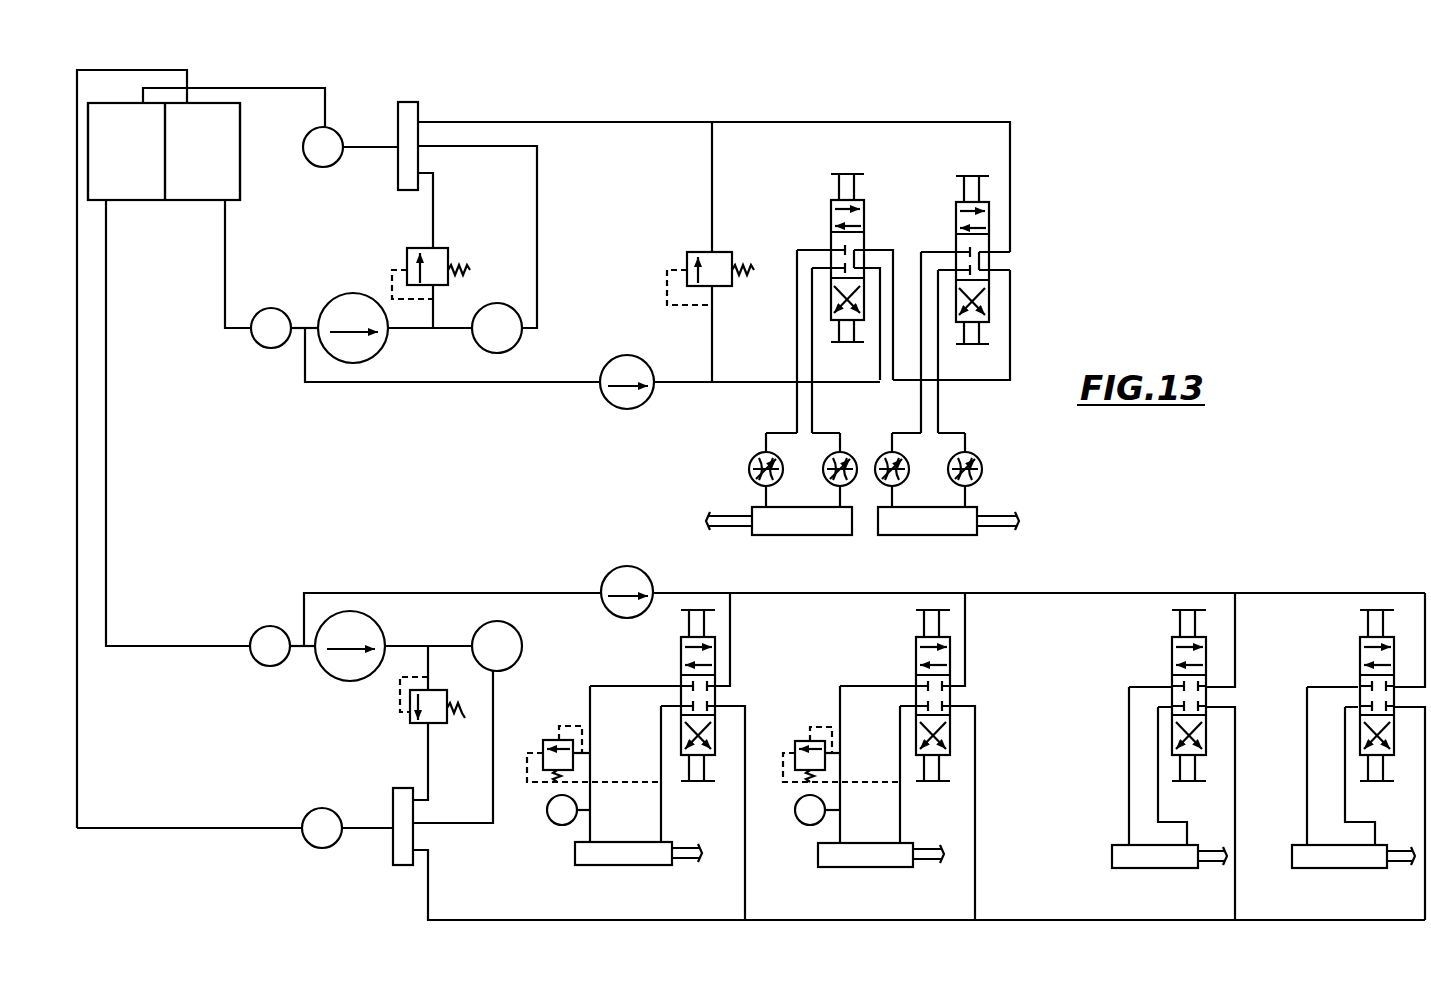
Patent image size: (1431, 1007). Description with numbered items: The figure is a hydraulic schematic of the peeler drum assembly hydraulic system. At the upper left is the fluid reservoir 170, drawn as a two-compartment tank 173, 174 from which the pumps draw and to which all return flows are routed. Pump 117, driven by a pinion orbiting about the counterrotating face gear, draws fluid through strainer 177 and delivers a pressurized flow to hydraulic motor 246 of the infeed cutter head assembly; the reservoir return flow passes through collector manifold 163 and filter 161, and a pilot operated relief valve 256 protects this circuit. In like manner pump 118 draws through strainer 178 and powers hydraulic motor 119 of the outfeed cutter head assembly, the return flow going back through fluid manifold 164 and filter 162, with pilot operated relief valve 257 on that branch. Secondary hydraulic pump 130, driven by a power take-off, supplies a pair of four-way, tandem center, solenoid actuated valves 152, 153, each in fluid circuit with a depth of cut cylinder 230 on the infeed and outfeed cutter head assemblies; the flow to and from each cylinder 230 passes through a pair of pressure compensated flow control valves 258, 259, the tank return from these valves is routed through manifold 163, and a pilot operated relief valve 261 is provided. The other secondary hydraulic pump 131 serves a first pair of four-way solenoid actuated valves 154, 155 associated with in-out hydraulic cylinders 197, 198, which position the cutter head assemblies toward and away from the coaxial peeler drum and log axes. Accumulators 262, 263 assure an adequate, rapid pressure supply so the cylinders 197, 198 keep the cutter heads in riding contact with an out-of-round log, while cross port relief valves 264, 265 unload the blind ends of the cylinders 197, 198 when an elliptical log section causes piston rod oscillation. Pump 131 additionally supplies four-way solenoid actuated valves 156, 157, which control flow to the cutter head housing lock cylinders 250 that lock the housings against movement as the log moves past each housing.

The hydraulic fluid reservoir 170 is at (150, 200).
The reservoir compartment 173 is at (137, 165).
The reservoir compartment 174 is at (218, 165).
The filter 161 is at (321, 167).
The collector manifold 163 is at (398, 173).
The pilot operated relief valve 256 is at (442, 250).
The strainer 177 is at (268, 348).
The hydraulic pump 117 is at (372, 352).
The hydraulic motor 246 is at (495, 353).
The secondary hydraulic pump 130 is at (617, 408).
The pilot operated relief valve 261 is at (722, 286).
The four-way, tandem center, solenoid actuated valve 152 is at (866, 224).
The four-way, tandem center, solenoid actuated valve 153 is at (955, 225).
The pressure compensated flow control valves 258 is at (825, 467).
The pressure compensated flow control valves 259 is at (950, 467).
The depth of cut cylinder 230 is at (797, 535).
The secondary hydraulic pump 131 is at (614, 566).
The strainer 178 is at (267, 666).
The hydraulic pump 118 is at (338, 668).
The hydraulic motor 119 is at (522, 648).
The pilot operated relief valve 257 is at (438, 723).
The filter 162 is at (318, 848).
The fluid manifold 164 is at (393, 845).
The four-way solenoid actuated valve 154 is at (681, 665).
The in-out hydraulic cylinder 197 is at (613, 865).
The cross port relief valve 264 is at (557, 740).
The accumulator 262 is at (552, 823).
The four-way solenoid actuated valve 155 is at (916, 663).
The in-out hydraulic cylinder 198 is at (858, 867).
The cross port relief valve 265 is at (808, 741).
The accumulator 263 is at (800, 824).
The four-way, solenoid actuated valve 156 is at (1171, 660).
The four-way, solenoid actuated valve 157 is at (1358, 657).
The cutter head housing lock cylinder 250 is at (1150, 868).